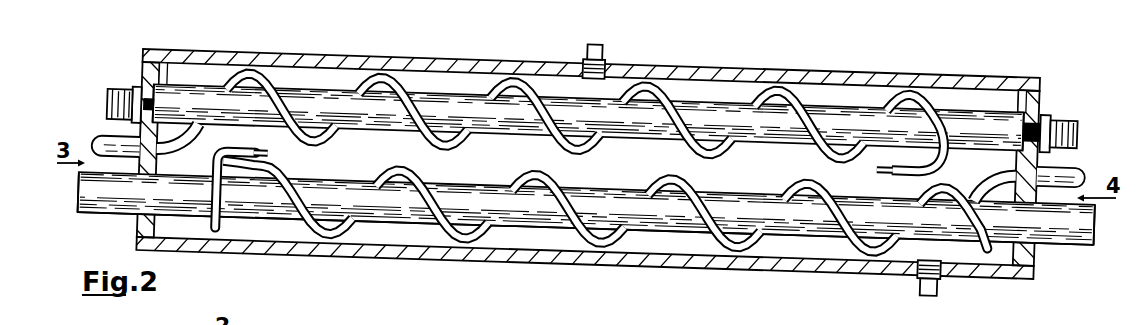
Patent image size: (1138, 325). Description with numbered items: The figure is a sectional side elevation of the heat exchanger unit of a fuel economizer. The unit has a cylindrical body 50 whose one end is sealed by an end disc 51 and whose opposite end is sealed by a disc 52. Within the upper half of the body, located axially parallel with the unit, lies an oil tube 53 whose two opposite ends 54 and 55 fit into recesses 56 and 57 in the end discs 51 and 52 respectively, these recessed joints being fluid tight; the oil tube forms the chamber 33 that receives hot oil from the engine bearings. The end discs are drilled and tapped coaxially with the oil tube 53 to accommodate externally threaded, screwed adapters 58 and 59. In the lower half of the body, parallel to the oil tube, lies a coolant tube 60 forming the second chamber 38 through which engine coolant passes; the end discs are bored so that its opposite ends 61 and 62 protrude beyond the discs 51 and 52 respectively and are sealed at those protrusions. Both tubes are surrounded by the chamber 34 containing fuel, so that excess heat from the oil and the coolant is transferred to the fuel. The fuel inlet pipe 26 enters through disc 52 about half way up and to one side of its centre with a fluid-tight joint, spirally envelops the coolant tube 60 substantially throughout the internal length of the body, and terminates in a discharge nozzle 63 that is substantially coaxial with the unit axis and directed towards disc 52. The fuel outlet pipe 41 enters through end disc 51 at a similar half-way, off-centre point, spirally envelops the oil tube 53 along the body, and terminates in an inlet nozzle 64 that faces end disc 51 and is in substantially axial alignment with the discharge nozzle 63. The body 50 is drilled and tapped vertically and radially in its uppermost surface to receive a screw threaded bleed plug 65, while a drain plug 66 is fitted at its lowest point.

The fuel inlet pipe 26 is at (1072, 170).
The chamber 33 is at (322, 108).
The chamber 34 is at (620, 178).
The second chamber 38 is at (523, 208).
The fuel outlet pipe 41 is at (97, 139).
The cylindrical body 50 is at (798, 69).
The end disc 51 is at (143, 74).
The disc 52 is at (1043, 102).
The oil tube 53 is at (704, 100).
The oil tube end 54 is at (173, 84).
The oil tube end 55 is at (1001, 110).
The recess 56 is at (159, 61).
The recess 57 is at (1028, 113).
The screwed adapter 58 is at (135, 90).
The screwed adapter 59 is at (1057, 115).
The coolant tube 60 is at (408, 222).
The coolant tube end 61 is at (111, 214).
The coolant tube end 62 is at (1057, 244).
The discharge nozzle 63 is at (262, 153).
The inlet nozzle 64 is at (876, 173).
The bleed plug 65 is at (604, 49).
The drain plug 66 is at (939, 294).